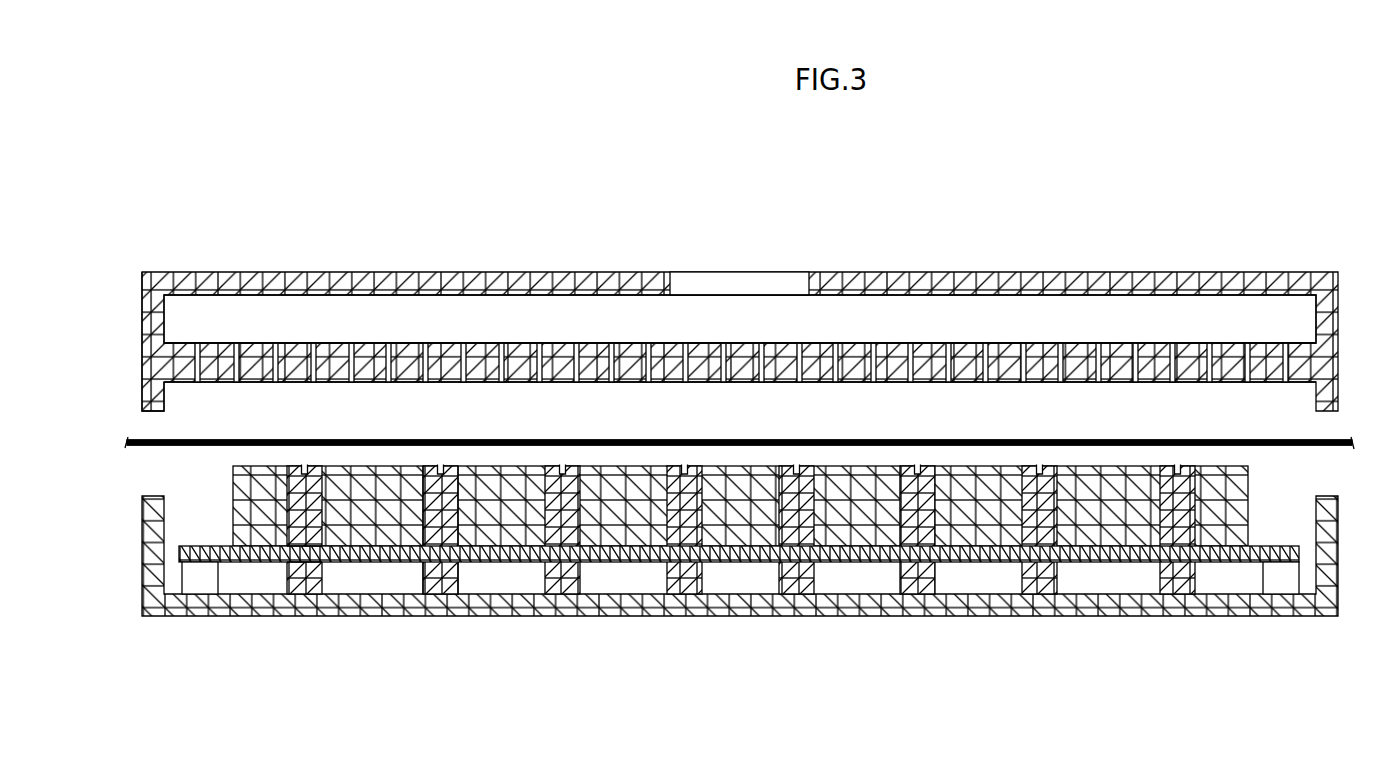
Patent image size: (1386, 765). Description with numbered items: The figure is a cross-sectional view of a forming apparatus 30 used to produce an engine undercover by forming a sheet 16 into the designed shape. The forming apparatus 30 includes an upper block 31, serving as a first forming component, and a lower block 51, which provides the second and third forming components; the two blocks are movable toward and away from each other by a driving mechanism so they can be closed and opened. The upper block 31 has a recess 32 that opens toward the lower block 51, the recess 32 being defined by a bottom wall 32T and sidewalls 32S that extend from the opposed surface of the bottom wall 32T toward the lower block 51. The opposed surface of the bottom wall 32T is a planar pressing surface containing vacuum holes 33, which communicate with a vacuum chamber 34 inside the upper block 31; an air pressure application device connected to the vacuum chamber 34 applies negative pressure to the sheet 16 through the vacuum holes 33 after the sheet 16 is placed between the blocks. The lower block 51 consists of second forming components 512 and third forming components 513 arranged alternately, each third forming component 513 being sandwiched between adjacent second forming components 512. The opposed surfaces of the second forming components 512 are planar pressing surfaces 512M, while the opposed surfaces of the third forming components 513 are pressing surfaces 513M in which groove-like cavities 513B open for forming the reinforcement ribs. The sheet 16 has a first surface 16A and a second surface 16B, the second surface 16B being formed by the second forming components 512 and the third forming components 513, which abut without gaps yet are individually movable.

The forming apparatus 30 is at (1252, 167).
The upper block 31 is at (196, 263).
The recess 32 is at (163, 407).
The sidewalls 32S is at (152, 400).
The bottom wall 32T is at (188, 350).
The vacuum holes 33 is at (538, 362).
The vacuum chamber 34 is at (630, 322).
The sheet 16 is at (147, 445).
The first surface 16A is at (917, 440).
The second surface 16B is at (863, 447).
The lower block 51 is at (197, 627).
The second forming components 512 is at (378, 535).
The pressing surfaces 512M is at (357, 466).
The third forming components 513 is at (443, 533).
The cavities 513B is at (443, 468).
The pressing surfaces 513M is at (453, 466).